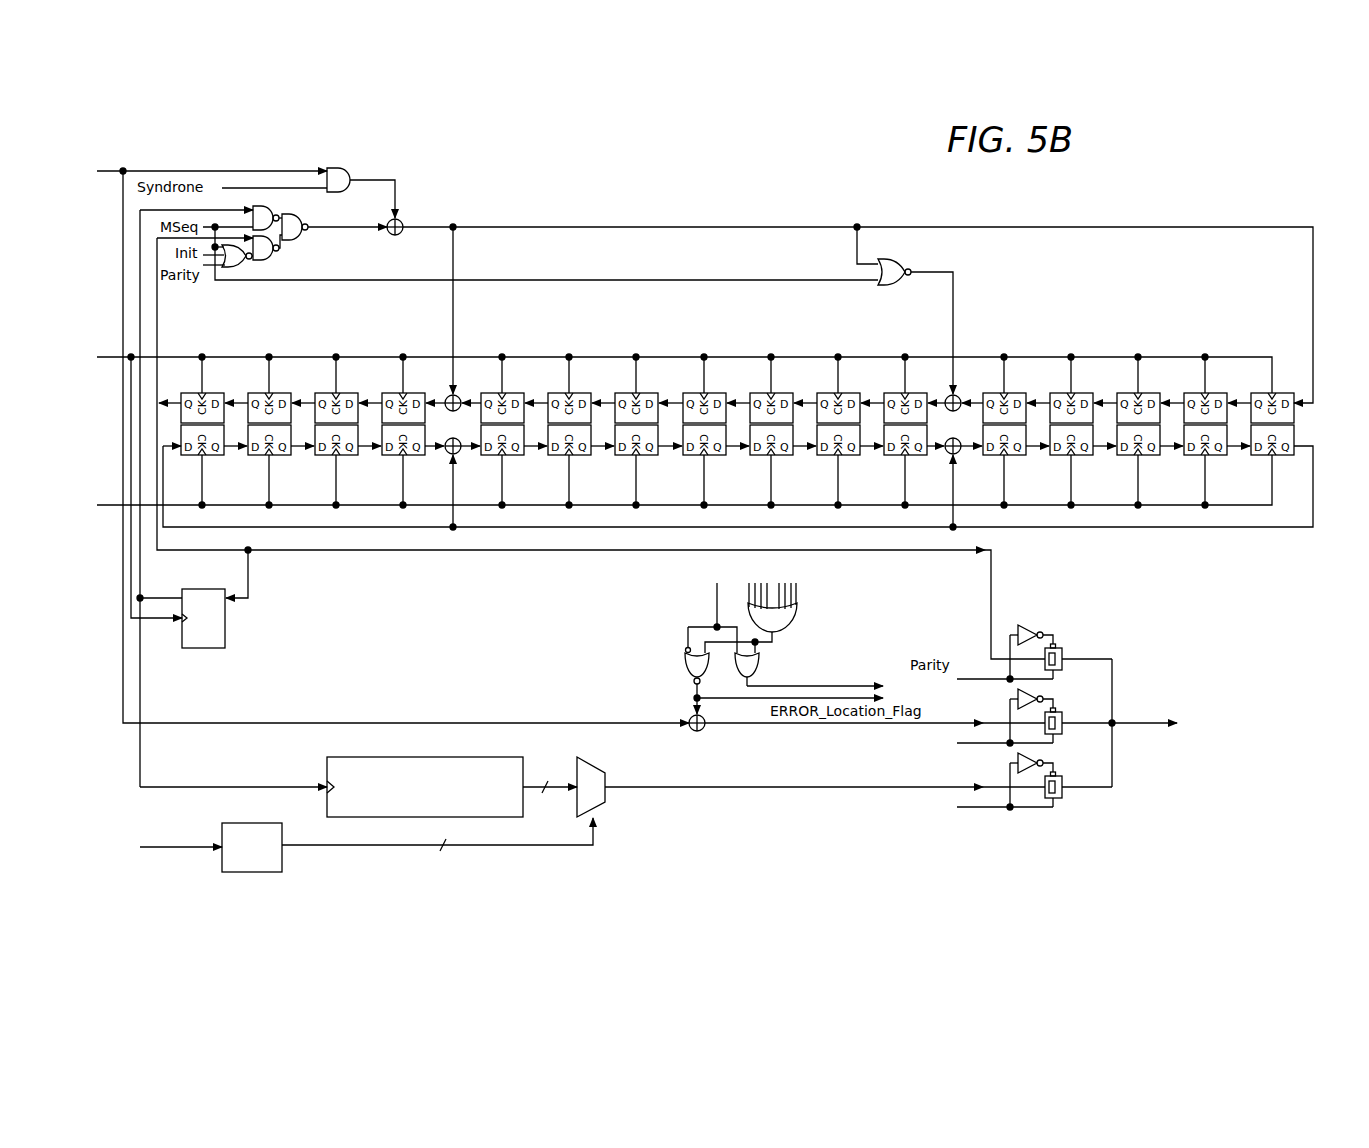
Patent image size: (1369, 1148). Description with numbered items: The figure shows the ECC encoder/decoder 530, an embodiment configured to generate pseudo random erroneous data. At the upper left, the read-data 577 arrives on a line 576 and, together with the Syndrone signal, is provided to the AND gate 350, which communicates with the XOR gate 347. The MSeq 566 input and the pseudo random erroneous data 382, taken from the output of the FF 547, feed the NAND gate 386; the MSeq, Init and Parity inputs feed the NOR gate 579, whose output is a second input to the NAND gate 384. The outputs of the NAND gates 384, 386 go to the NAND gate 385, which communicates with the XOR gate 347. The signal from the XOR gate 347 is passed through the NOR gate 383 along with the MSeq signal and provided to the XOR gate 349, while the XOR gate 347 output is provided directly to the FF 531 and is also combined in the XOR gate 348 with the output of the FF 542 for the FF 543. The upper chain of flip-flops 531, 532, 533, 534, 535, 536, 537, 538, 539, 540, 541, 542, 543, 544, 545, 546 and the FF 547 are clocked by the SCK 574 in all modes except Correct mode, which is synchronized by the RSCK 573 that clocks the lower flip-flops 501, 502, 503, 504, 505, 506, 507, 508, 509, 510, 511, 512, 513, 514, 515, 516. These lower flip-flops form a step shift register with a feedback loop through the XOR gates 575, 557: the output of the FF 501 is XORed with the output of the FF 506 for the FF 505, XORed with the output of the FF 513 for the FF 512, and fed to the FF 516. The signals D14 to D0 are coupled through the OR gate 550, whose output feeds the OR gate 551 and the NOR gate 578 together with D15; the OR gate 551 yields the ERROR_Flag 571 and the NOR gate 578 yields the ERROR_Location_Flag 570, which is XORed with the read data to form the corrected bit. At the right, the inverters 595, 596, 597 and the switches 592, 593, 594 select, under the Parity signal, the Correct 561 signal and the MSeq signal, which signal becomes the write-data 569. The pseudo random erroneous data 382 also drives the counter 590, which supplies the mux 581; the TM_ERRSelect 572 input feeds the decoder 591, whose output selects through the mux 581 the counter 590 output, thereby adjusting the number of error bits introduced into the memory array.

The ECC encoder/decoder 530 is at (563, 197).
The read-data 577 is at (138, 158).
The read data line 576 is at (388, 447).
The SCK 574 is at (675, 354).
The RSCK 573 is at (675, 480).
The AND gate 350 is at (350, 170).
The XOR gate 347 is at (403, 222).
The NAND gate 386 is at (268, 206).
The NAND gate 385 is at (298, 238).
The NAND gate 384 is at (270, 260).
The NOR gate 579 is at (240, 267).
The NOR gate 383 is at (890, 262).
The XOR gate 348 is at (447, 392).
The XOR gate 349 is at (947, 392).
The XOR gate 575 is at (458, 454).
The XOR gate 557 is at (961, 455).
The D-type flip-flop 546 is at (190, 393).
The D-type flip-flop 545 is at (257, 393).
The D-type flip-flop 544 is at (324, 393).
The D-type flip-flop 543 is at (391, 393).
The D-type flip-flop 542 is at (490, 393).
The D-type flip-flop 541 is at (557, 393).
The D-type flip-flop 540 is at (624, 393).
The D-type flip-flop 539 is at (692, 393).
The D-type flip-flop 538 is at (759, 393).
The D-type flip-flop 537 is at (826, 393).
The D-type flip-flop 536 is at (893, 393).
The D-type flip-flop 535 is at (992, 393).
The D-type flip-flop 534 is at (1059, 393).
The D-type flip-flop 533 is at (1126, 393).
The D-type flip-flop 532 is at (1193, 393).
The D-type flip-flop 531 is at (1260, 393).
The D-type flip-flop 516 is at (217, 455).
The D-type flip-flop 515 is at (284, 455).
The D-type flip-flop 514 is at (351, 455).
The D-type flip-flop 513 is at (418, 455).
The D-type flip-flop 512 is at (517, 455).
The D-type flip-flop 511 is at (584, 455).
The D-type flip-flop 510 is at (651, 455).
The D-type flip-flop 509 is at (719, 455).
The D-type flip-flop 508 is at (786, 455).
The D-type flip-flop 507 is at (853, 455).
The D-type flip-flop 506 is at (920, 455).
The D-type flip-flop 505 is at (1019, 455).
The D-type flip-flop 504 is at (1086, 455).
The D-type flip-flop 503 is at (1153, 455).
The D-type flip-flop 502 is at (1220, 455).
The D-type flip-flop 501 is at (1287, 455).
The flip-flop 547 is at (212, 648).
The OR gate 550 is at (797, 622).
The NOR gate 578 is at (685, 660).
The OR gate 551 is at (760, 664).
The ERROR_Flag 571 is at (855, 645).
The ERROR_Location_Flag 570 is at (817, 727).
The inverter 595 is at (1024, 622).
The inverter 596 is at (1018, 694).
The inverter 597 is at (1018, 758).
The switch 592 is at (1065, 672).
The switch 593 is at (1065, 736).
The switch 594 is at (1068, 798).
The Correct 561 is at (928, 750).
The MSeq 566 is at (928, 814).
The write-data 569 is at (1222, 718).
The pseudo random erroneous data 382 is at (138, 770).
The counter 590 is at (347, 757).
The multiplexer 581 is at (600, 806).
The decoder 591 is at (282, 860).
The TM_ERRSelect 572 is at (162, 850).